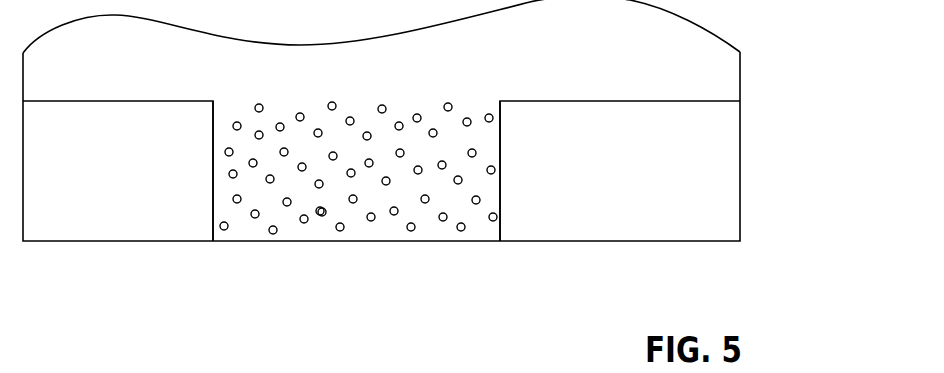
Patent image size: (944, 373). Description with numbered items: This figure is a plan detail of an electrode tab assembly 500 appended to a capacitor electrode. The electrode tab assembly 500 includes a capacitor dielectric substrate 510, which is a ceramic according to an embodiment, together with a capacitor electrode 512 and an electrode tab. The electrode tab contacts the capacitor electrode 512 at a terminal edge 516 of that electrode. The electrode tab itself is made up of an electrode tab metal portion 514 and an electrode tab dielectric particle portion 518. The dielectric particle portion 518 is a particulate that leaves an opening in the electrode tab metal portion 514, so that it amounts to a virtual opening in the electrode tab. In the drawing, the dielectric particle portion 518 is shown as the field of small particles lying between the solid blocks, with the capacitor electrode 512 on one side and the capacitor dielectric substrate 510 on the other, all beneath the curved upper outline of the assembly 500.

The electrode tab assembly 500 is at (798, 92).
The capacitor dielectric substrate 510 is at (636, 214).
The capacitor electrode 512 is at (147, 77).
The electrode tab metal portion 514 is at (211, 204).
The terminal edge 516 is at (578, 101).
The electrode tab dielectric particle portion 518 is at (301, 223).